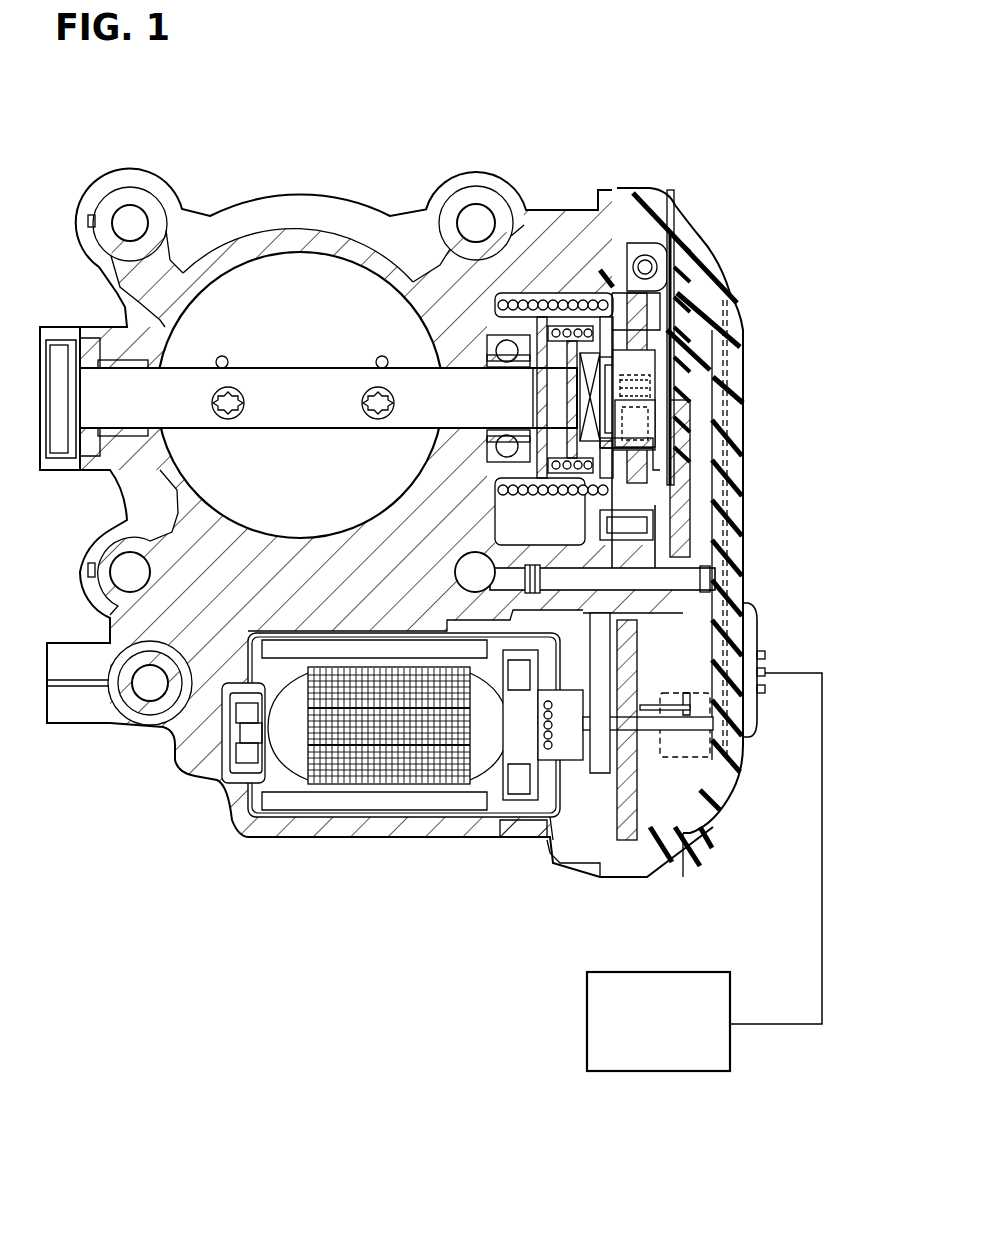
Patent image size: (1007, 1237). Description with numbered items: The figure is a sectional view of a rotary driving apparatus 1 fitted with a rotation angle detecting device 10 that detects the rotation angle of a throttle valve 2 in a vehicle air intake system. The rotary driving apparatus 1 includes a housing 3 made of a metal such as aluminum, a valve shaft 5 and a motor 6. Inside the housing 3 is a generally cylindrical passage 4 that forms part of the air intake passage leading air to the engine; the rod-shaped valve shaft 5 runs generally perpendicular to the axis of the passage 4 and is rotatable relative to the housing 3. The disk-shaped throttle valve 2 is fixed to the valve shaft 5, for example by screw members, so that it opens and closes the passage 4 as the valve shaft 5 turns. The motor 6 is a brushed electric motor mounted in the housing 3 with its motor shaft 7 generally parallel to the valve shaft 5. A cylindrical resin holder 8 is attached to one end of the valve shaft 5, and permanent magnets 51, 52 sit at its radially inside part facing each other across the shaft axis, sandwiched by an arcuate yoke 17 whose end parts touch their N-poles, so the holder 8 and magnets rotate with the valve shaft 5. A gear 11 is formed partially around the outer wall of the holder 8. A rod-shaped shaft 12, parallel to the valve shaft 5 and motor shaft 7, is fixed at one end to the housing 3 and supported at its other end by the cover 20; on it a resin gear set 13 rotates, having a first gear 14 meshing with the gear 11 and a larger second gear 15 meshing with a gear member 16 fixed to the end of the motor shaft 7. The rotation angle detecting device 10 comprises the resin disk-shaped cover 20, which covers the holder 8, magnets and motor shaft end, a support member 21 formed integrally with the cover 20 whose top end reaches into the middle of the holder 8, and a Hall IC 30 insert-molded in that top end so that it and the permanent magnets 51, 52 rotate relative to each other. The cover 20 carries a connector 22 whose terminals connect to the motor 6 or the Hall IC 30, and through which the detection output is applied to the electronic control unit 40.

The rotary driving apparatus 1 is at (569, 98).
The throttle valve 2 is at (300, 268).
The housing 3 is at (168, 708).
The passage 4 is at (230, 280).
The valve shaft 5 is at (279, 376).
The motor 6 is at (350, 793).
The motor shaft 7 is at (585, 735).
The holder 8 is at (603, 300).
The rotation angle detecting device 10 is at (790, 352).
The gear 11 is at (680, 555).
The shaft 12 is at (696, 582).
The gear set 13 is at (670, 545).
The first gear 14 is at (663, 528).
The second gear 15 is at (685, 710).
The gear member 16 is at (695, 758).
The yoke 17 is at (637, 422).
The cover 20 is at (700, 240).
The support member 21 is at (720, 345).
The connector 22 is at (740, 642).
The Hall IC 30 is at (660, 330).
The electronic control unit (ECU) 40 is at (657, 978).
The permanent magnet 51 is at (660, 290).
The permanent magnet 52 is at (645, 458).